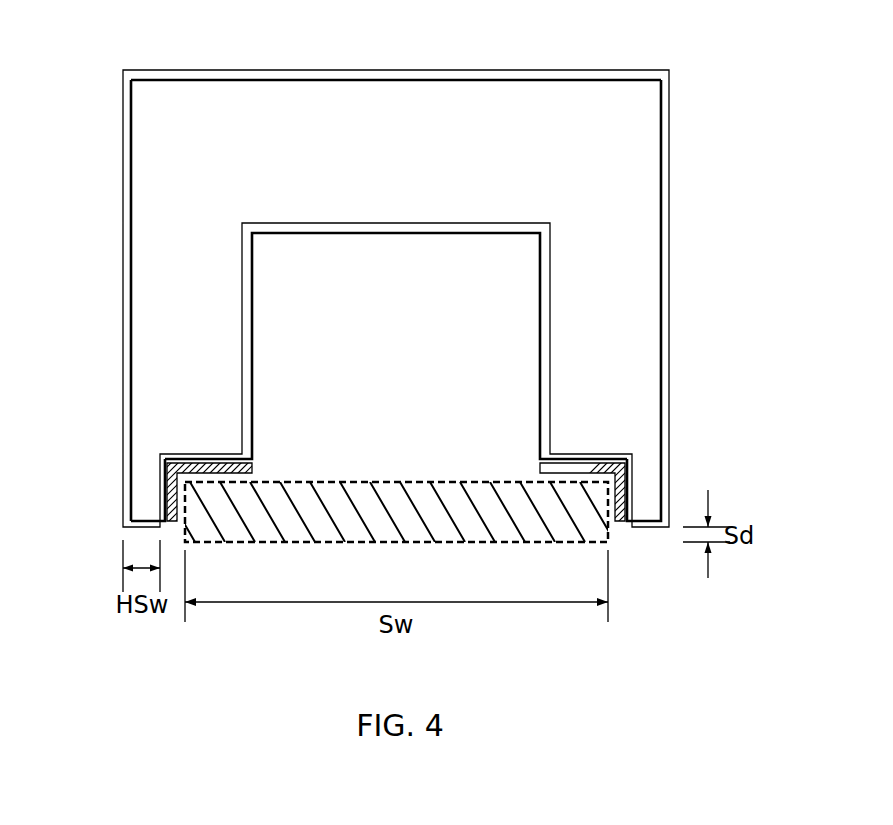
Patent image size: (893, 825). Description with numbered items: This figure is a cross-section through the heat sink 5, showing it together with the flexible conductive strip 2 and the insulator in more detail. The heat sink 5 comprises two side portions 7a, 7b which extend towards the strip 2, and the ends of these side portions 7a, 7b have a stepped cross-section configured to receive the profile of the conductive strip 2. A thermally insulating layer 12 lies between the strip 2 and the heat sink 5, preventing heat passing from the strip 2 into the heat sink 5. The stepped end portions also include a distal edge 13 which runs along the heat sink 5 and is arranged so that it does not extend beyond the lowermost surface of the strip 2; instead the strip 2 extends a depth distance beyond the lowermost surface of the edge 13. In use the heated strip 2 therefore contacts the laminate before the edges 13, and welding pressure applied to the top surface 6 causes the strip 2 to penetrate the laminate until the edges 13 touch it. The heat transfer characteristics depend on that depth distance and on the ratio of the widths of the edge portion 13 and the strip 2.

The flexible strip 2 is at (529, 544).
The heat sink 5 is at (394, 338).
The top surface 6 is at (598, 70).
The side portion 7a is at (103, 338).
The side portion 7b is at (670, 325).
The thermally insulating layer 12 is at (618, 525).
The distal edge 13 is at (138, 528).